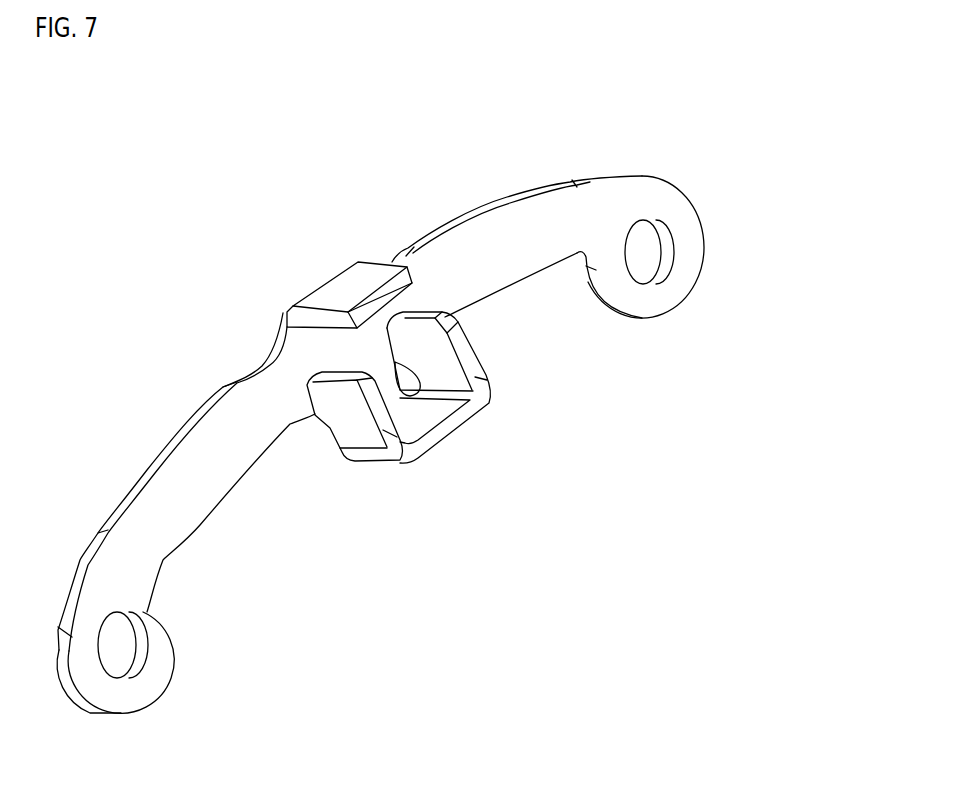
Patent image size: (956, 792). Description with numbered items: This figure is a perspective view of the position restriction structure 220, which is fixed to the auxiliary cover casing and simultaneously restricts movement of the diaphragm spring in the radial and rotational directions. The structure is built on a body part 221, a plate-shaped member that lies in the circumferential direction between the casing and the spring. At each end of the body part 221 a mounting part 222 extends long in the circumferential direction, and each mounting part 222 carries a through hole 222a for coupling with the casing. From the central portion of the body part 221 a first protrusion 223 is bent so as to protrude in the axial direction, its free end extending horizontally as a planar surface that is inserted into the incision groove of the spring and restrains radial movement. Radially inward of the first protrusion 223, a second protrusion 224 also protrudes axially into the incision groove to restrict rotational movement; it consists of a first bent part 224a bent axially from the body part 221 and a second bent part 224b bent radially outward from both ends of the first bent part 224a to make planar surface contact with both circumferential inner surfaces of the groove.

The position restriction structure 220 is at (178, 275).
The body part 221 is at (258, 417).
The mounting part 222 is at (665, 298).
The through hole 222a is at (665, 263).
The first protrusion 223 is at (343, 293).
The second protrusion 224 is at (552, 573).
The first bent part 224a is at (433, 417).
The second bent part 224b is at (425, 357).